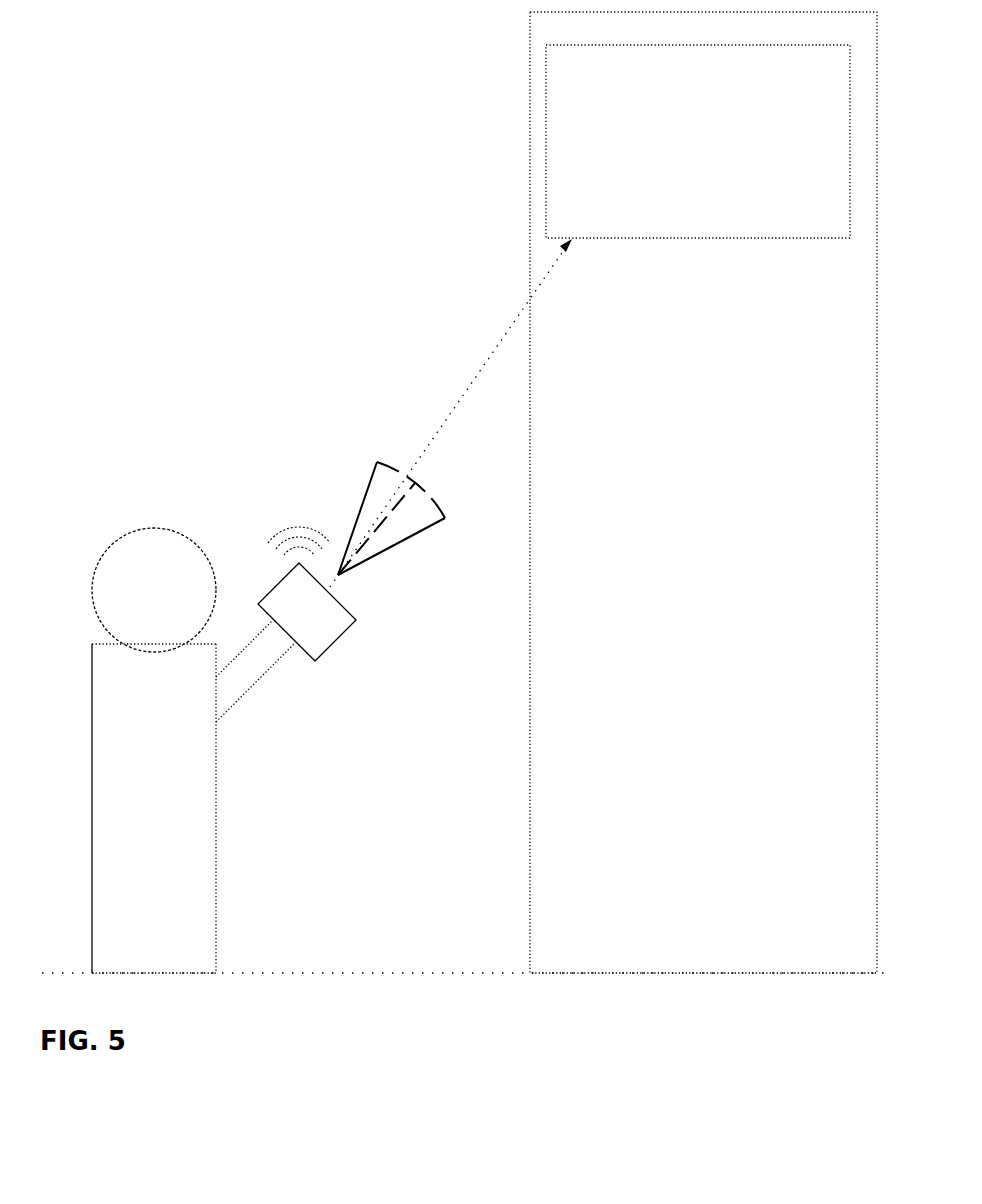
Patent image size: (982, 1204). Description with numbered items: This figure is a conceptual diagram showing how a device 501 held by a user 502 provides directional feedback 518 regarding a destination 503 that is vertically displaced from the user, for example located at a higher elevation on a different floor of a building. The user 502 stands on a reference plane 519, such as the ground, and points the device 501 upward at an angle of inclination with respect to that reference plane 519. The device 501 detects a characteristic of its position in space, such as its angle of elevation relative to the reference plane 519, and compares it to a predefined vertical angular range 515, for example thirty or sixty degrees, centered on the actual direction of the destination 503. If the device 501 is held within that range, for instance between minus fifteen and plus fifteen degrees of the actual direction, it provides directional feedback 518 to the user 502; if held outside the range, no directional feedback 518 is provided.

The device 501 is at (337, 639).
The user 502 is at (92, 803).
The destination 503 is at (698, 141).
The predefined vertical angular range 515 is at (407, 537).
The directional feedback 518 is at (283, 512).
The reference plane 519 is at (423, 973).